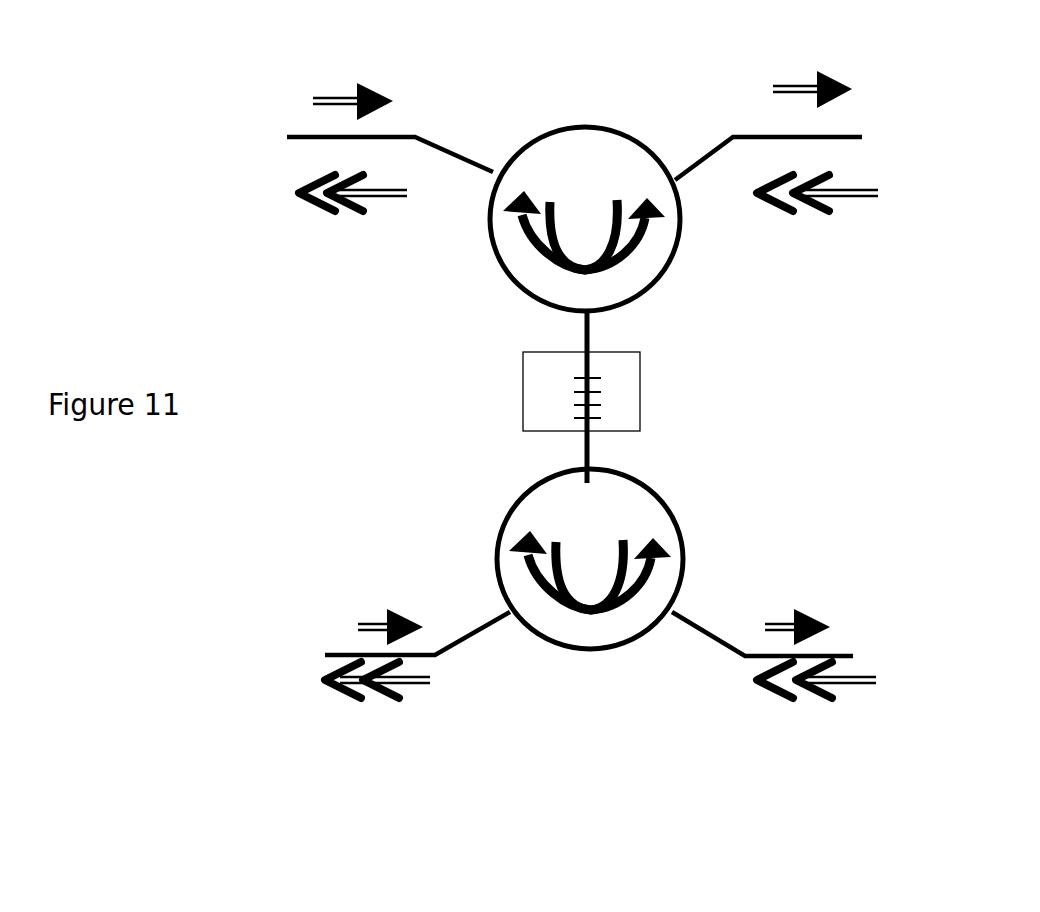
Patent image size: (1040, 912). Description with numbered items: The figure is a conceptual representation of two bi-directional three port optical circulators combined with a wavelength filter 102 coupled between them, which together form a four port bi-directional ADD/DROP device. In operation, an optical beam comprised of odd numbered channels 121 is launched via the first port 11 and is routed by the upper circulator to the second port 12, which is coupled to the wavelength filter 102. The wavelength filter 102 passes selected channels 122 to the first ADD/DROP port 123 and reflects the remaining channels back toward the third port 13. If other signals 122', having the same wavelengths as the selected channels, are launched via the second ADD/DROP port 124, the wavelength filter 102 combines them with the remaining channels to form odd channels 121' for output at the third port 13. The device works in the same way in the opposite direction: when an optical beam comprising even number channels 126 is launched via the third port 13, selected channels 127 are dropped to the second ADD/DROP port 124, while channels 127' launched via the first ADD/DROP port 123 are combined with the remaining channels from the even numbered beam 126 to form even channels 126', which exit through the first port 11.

The first port 11 is at (298, 128).
The third port 13 is at (850, 128).
The second port 12 is at (590, 337).
The wavelength filter 102 is at (547, 391).
The odd numbered channels 121 is at (396, 70).
The odd channels 121' is at (848, 58).
The selected channels 122 is at (846, 571).
The other signals 122' is at (383, 563).
The first ADD/DROP port 123 is at (840, 655).
The second ADD/DROP port 124 is at (327, 655).
The even number channels 126 is at (875, 247).
The even channels 126' is at (308, 233).
The selected channels 127 is at (345, 740).
The channels 127' is at (854, 748).